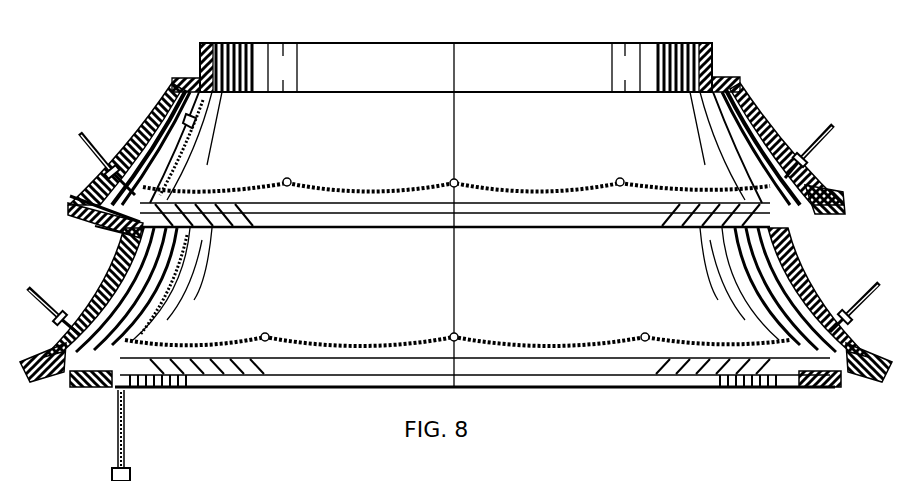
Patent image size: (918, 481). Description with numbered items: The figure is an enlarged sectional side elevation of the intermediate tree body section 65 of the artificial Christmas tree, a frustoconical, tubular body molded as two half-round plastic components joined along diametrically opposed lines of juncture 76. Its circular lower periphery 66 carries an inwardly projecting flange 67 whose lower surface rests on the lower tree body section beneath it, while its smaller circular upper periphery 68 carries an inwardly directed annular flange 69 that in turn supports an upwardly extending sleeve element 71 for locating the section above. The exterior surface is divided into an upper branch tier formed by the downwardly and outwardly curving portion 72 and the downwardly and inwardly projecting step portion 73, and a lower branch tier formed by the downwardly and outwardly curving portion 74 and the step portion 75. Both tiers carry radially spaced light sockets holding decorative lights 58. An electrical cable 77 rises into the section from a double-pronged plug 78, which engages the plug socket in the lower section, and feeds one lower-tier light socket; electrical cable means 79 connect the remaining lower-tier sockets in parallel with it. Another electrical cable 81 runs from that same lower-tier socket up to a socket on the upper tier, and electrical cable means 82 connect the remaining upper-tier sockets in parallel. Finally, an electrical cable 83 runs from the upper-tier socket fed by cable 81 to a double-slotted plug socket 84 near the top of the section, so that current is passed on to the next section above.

The decorative lights 58 is at (832, 133).
The intermediate tree body section 65 is at (67, 208).
The lower periphery 66 is at (80, 390).
The flange 67 is at (812, 383).
The upper periphery 68 is at (740, 78).
The annular flange 69 is at (193, 77).
The sleeve element 71 is at (200, 43).
The downwardly and outwardly curving portion 72 is at (160, 113).
The step portion 73 is at (78, 227).
The downwardly and outwardly curving portion 74 is at (799, 265).
The step portion 75 is at (858, 380).
The lines of juncture 76 is at (456, 238).
The electrical cable 77 is at (127, 421).
The double-pronged plug 78 is at (128, 477).
The electrical cable means 79 is at (308, 338).
The electrical cable 81 is at (140, 273).
The electrical cable means 82 is at (322, 190).
The electrical cable 83 is at (173, 157).
The double-slotted plug socket 84 is at (197, 120).